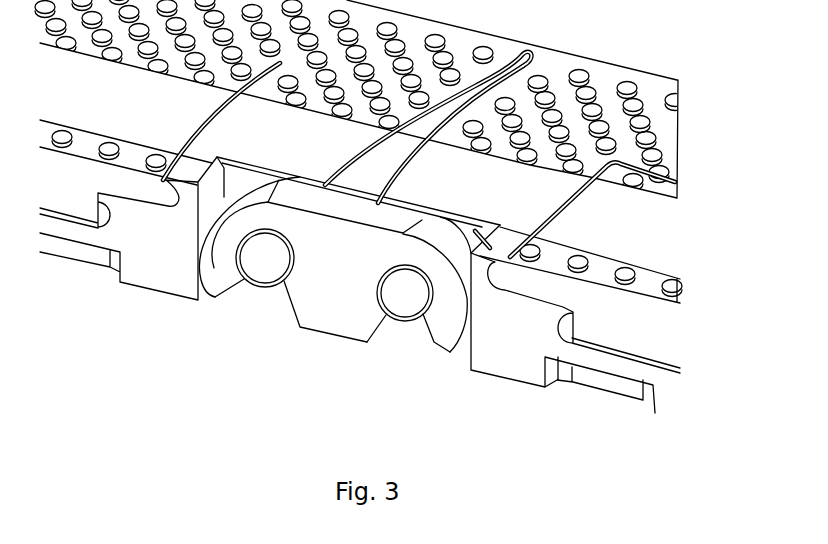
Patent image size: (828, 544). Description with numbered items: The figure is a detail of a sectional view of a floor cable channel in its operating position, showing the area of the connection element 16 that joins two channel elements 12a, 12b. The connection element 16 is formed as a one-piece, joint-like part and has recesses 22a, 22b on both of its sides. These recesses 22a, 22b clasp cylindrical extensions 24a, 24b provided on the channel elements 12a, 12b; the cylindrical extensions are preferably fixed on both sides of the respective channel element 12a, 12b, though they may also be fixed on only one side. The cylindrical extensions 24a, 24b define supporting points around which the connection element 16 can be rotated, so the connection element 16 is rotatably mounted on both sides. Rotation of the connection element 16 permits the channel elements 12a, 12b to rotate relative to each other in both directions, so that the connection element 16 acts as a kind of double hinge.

The channel element 12a is at (157, 290).
The channel element 12b is at (505, 378).
The connection element 16 is at (330, 307).
The recess 22a is at (270, 320).
The recess 22b is at (394, 354).
The cylindrical extension 24a is at (268, 260).
The cylindrical extension 24b is at (405, 292).